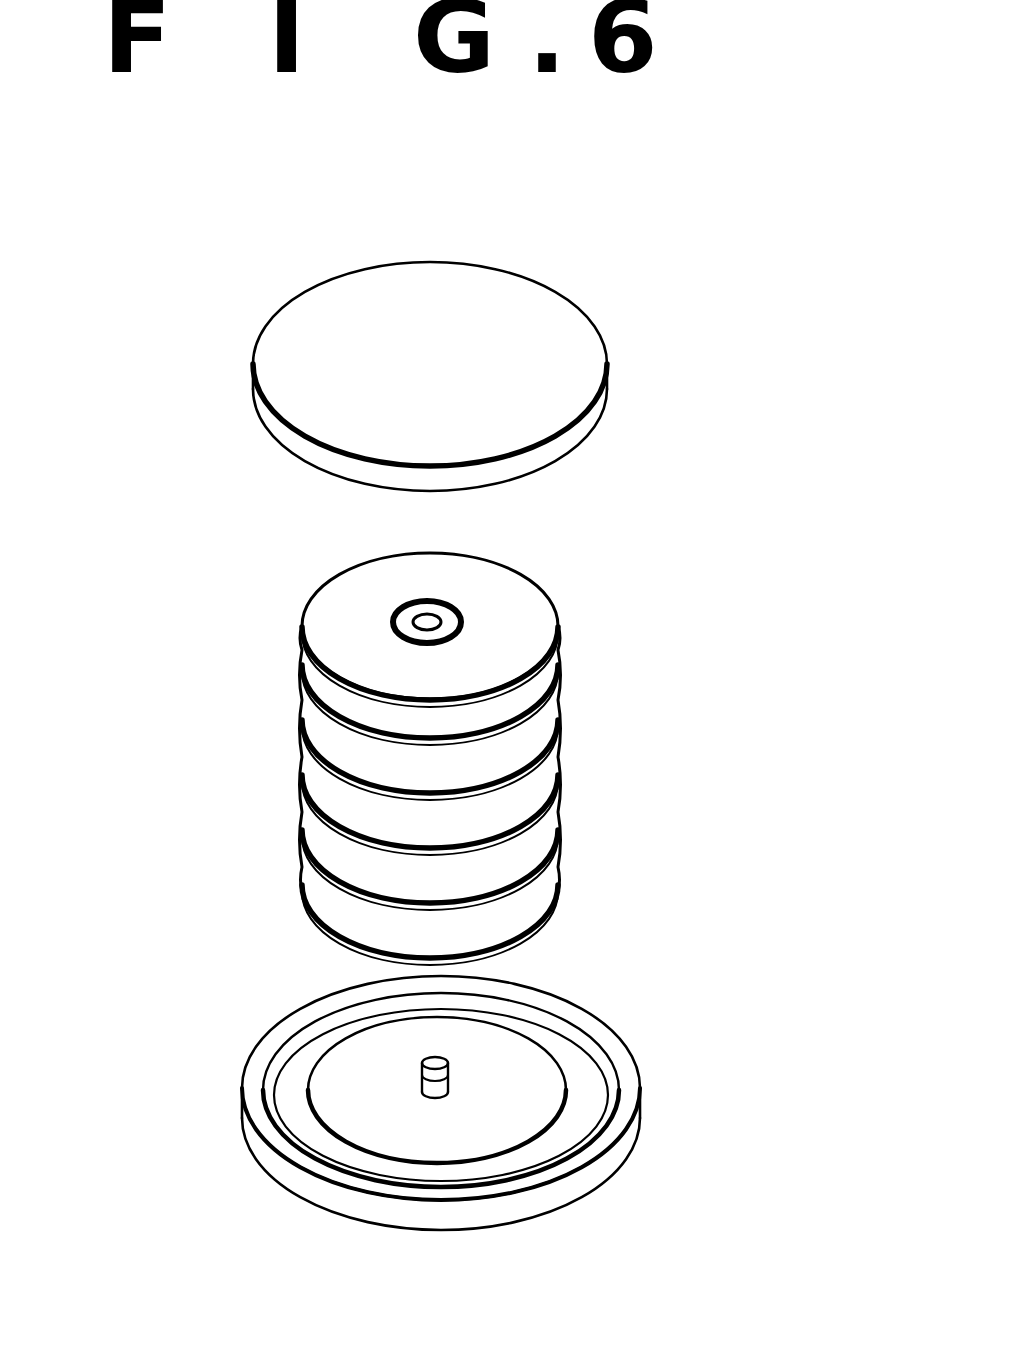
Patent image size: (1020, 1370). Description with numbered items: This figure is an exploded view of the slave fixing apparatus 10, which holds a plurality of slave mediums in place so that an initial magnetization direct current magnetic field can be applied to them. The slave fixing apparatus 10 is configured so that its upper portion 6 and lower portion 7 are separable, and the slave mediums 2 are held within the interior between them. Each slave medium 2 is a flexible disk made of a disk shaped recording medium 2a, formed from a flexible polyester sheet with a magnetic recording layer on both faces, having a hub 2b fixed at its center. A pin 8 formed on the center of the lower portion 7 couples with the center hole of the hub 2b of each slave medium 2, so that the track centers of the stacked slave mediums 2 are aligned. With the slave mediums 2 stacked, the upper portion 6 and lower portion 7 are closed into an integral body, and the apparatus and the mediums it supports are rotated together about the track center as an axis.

The slave fixing apparatus 10 is at (178, 300).
The upper portion 6 is at (575, 358).
The slave medium 2 is at (431, 741).
The recording medium 2a is at (335, 627).
The hub 2b is at (458, 604).
The lower portion 7 is at (620, 1163).
The pin 8 is at (437, 1057).